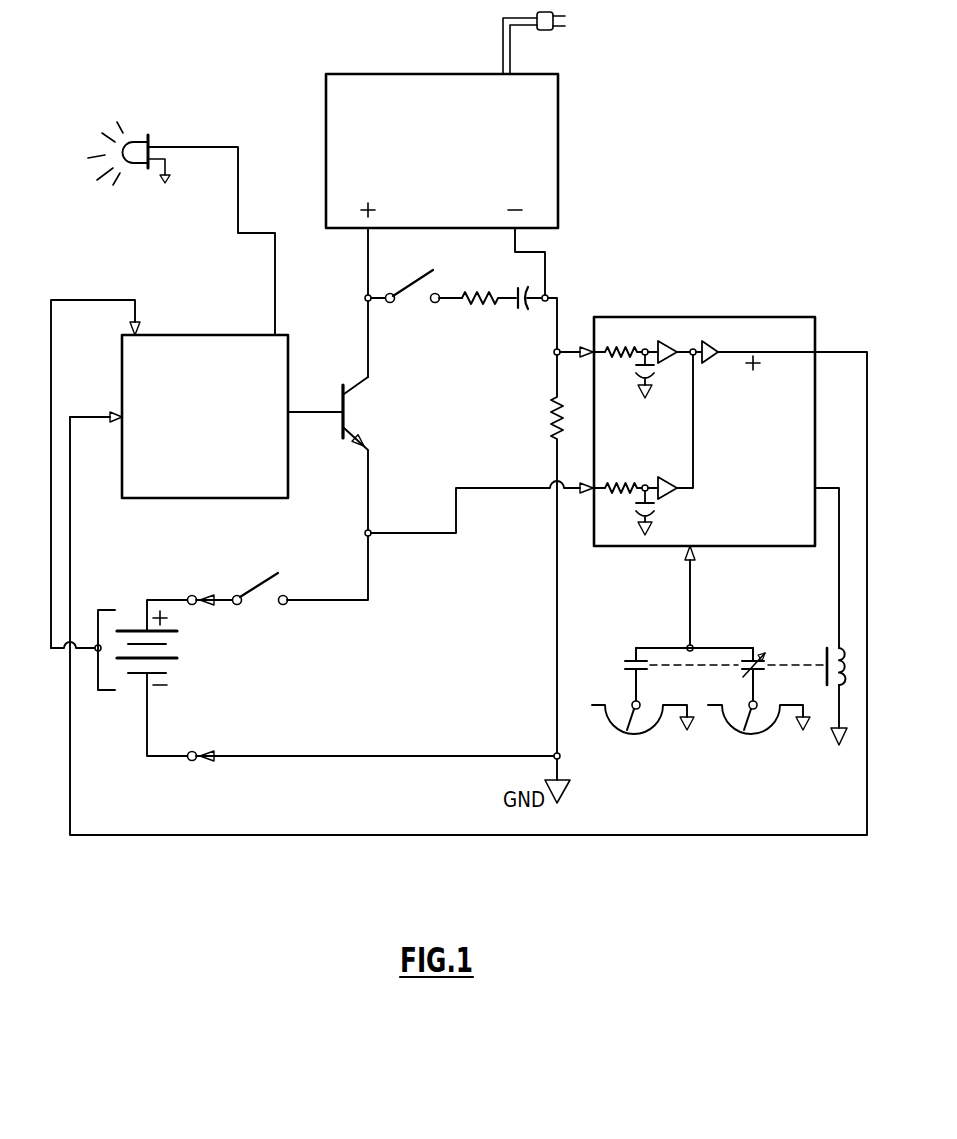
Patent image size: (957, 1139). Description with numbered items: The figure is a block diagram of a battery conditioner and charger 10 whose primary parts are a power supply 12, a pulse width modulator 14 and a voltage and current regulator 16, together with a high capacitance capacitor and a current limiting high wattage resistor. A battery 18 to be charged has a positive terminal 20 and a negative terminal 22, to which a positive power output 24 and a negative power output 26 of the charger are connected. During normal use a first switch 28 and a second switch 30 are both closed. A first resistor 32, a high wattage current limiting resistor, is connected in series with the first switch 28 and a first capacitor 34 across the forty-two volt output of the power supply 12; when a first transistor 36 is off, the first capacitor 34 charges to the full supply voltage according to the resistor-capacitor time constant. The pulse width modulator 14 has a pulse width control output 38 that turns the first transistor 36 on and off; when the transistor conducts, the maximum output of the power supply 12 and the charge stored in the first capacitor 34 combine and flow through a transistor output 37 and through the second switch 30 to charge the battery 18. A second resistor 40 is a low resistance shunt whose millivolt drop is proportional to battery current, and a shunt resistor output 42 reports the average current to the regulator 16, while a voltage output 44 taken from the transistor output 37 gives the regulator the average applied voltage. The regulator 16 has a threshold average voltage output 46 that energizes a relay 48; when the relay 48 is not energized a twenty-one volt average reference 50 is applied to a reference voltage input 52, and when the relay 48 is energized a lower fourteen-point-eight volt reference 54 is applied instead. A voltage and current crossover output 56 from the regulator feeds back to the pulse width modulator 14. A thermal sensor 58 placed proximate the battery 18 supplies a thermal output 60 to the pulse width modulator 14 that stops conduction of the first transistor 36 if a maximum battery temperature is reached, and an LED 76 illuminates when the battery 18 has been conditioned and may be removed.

The battery conditioner and charger 10 is at (684, 131).
The power supply 12 is at (558, 172).
The pulse width modulator 14 is at (163, 335).
The voltage and current regulator 16 is at (702, 317).
The battery 18 is at (183, 650).
The positive terminal 20 is at (190, 598).
The negative terminal 22 is at (191, 764).
The positive power output 24 is at (220, 598).
The negative power output 26 is at (230, 758).
The first switch S1 28 is at (399, 292).
The second switch S2 30 is at (283, 578).
The first resistor R1 32 is at (492, 290).
The first capacitor C1 34 is at (519, 312).
The first transistor Q 36 is at (365, 393).
The transistor output 37 is at (368, 477).
The pulse width control output 38 is at (310, 418).
The second resistor R2 40 is at (551, 437).
The shunt resistor output 42 is at (570, 347).
The voltage output 44 is at (418, 533).
The threshold average voltage output 46 is at (821, 488).
The relay K 48 is at (827, 656).
The 21 volt average reference 50 is at (757, 767).
The reference voltage input 52 is at (690, 580).
The 14.8 volt reference 54 is at (639, 767).
The voltage and current crossover output 56 is at (598, 835).
The thermal sensor 58 is at (92, 612).
The thermal output 60 is at (100, 300).
The LED 76 is at (139, 135).